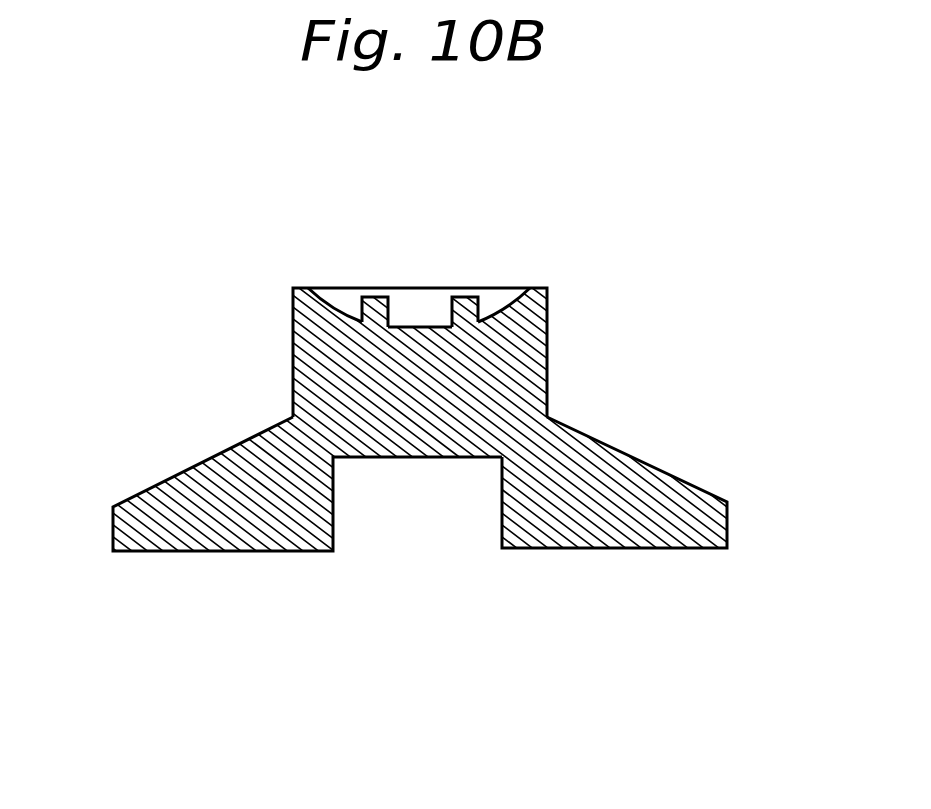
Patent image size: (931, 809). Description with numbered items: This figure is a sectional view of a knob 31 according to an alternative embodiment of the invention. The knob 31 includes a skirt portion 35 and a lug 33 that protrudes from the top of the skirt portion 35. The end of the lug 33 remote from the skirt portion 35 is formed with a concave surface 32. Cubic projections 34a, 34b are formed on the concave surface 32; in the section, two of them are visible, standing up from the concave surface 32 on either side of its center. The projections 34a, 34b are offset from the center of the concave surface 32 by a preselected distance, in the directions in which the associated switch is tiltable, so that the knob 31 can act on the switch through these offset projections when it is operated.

The knob 31 is at (568, 549).
The concave surface 32 is at (510, 300).
The lug 33 is at (295, 342).
The cubic projection 34a is at (377, 296).
The cubic projection 34b is at (462, 296).
The skirt portion 35 is at (681, 480).